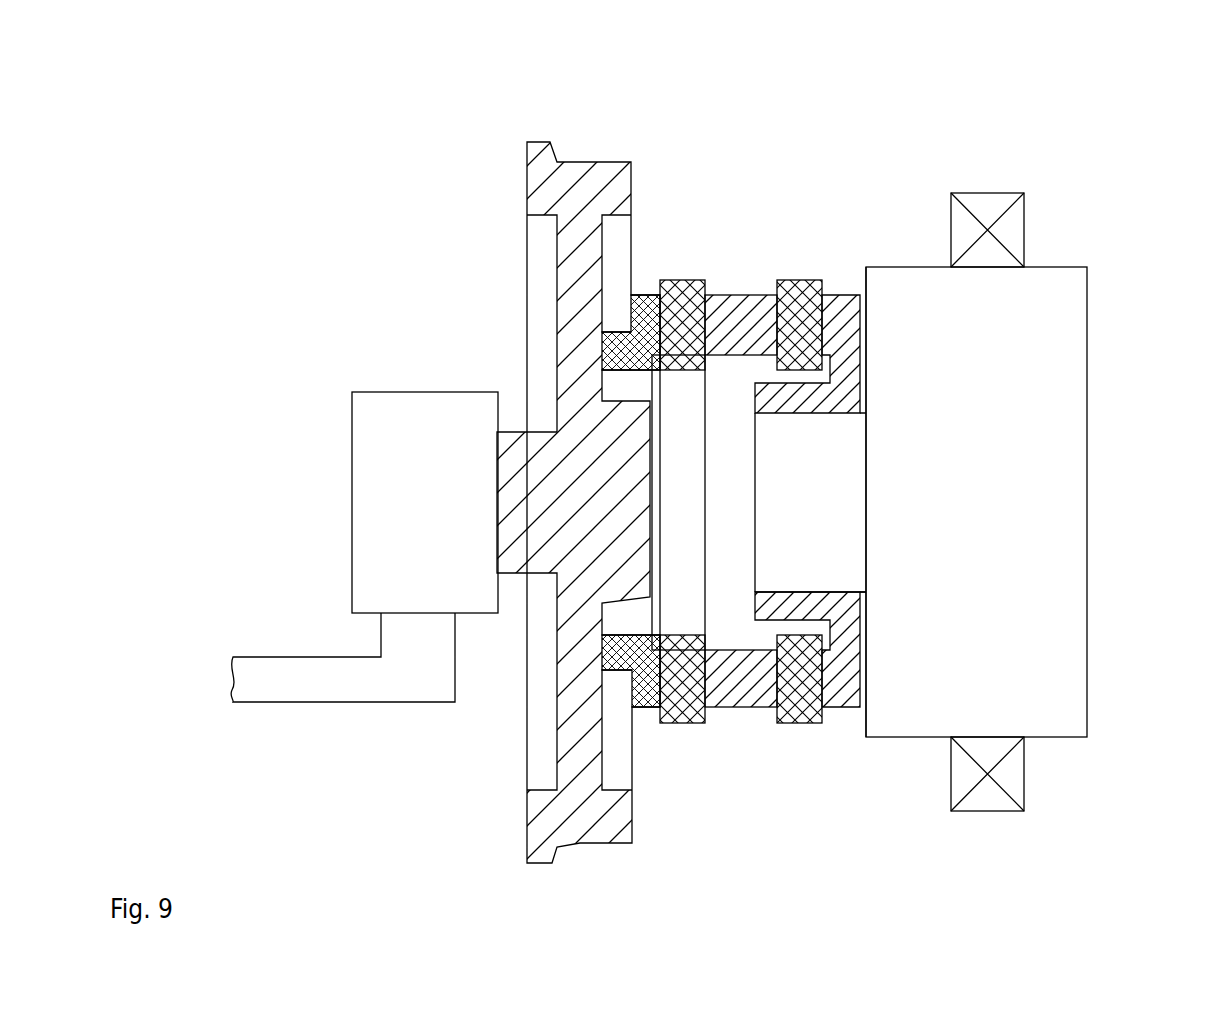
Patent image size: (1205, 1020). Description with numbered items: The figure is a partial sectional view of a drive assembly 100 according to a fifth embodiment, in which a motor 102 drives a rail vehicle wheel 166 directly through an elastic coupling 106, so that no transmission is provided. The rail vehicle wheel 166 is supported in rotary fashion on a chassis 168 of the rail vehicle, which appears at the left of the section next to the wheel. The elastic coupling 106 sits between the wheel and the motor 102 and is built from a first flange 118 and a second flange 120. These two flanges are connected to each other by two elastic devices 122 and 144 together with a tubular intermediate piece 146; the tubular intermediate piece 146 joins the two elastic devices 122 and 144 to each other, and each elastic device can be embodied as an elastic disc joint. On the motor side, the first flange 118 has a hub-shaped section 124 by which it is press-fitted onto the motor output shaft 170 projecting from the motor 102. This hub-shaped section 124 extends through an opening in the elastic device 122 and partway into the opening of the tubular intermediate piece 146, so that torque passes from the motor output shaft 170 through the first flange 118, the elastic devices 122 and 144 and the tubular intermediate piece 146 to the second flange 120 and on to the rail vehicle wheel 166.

The drive assembly 100 is at (1020, 123).
The motor 102 is at (1078, 241).
The elastic coupling 106 is at (878, 231).
The first flange 118 is at (845, 312).
The second flange 120 is at (645, 320).
The elastic device 122 is at (803, 318).
The hub-shaped section 124 is at (761, 600).
The elastic device 144 is at (683, 318).
The tubular intermediate piece 146 is at (735, 325).
The rail vehicle wheel 166 is at (654, 139).
The chassis 168 is at (425, 376).
The motor output shaft 170 is at (827, 530).